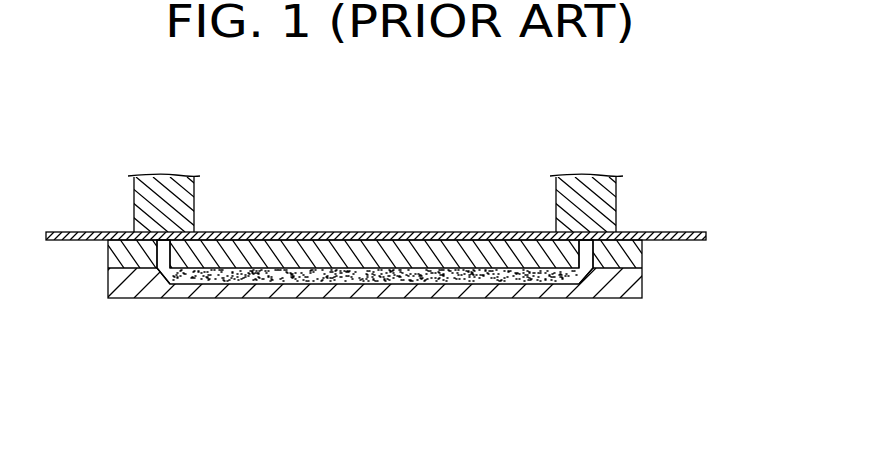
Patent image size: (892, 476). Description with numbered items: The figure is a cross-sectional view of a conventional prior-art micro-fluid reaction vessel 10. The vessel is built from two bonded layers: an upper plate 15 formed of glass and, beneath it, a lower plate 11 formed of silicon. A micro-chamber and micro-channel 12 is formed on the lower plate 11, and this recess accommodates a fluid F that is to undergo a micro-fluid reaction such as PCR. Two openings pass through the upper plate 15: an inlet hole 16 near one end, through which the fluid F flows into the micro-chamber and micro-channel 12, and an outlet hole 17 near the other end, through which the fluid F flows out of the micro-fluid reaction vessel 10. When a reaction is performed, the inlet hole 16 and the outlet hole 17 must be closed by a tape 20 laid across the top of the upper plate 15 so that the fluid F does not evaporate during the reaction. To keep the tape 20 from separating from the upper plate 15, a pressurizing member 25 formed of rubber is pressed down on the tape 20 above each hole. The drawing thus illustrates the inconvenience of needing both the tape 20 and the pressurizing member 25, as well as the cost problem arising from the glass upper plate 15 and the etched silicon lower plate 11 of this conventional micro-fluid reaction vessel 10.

The micro-fluid reaction vessel 10 is at (704, 257).
The lower plate 11 is at (642, 287).
The micro-chamber and micro-channel 12 is at (316, 287).
The upper plate 15 is at (642, 259).
The inlet hole 16 is at (163, 247).
The outlet hole 17 is at (604, 262).
The tape 20 is at (72, 232).
The pressurizing member 25 is at (166, 176).
The fluid F is at (363, 285).